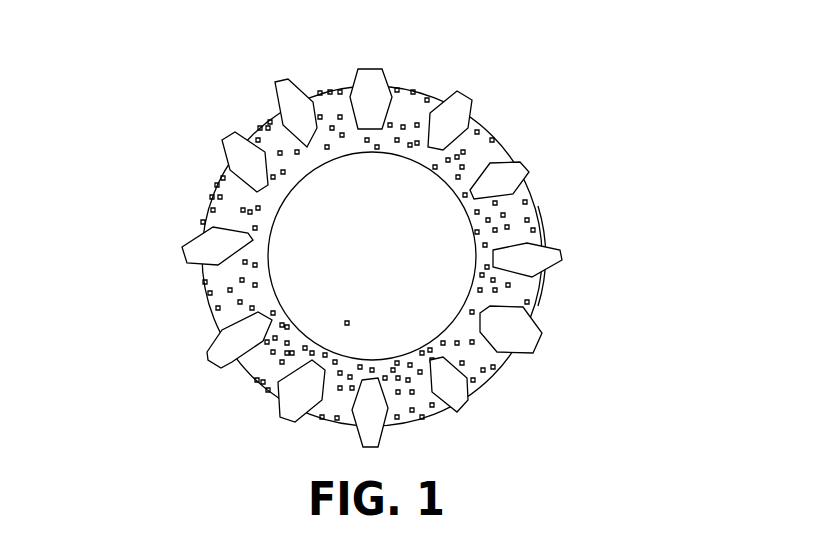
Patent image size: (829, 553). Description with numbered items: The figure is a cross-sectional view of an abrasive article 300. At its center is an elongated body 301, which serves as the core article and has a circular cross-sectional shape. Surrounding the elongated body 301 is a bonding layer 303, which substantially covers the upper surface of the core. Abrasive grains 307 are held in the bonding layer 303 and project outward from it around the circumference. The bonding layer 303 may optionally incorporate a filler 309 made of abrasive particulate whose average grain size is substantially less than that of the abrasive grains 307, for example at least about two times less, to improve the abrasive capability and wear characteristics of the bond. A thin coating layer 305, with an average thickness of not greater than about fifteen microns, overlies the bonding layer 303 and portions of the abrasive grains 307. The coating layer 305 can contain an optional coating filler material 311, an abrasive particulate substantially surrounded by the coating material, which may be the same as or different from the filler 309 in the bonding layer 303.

The abrasive article 300 is at (310, 225).
The elongated body 301 is at (386, 264).
The bonding layer 303 is at (513, 290).
The coating layer 305 is at (538, 218).
The abrasive grains 307 is at (472, 102).
The filler 309 is at (342, 113).
The coating filler material 311 is at (208, 290).